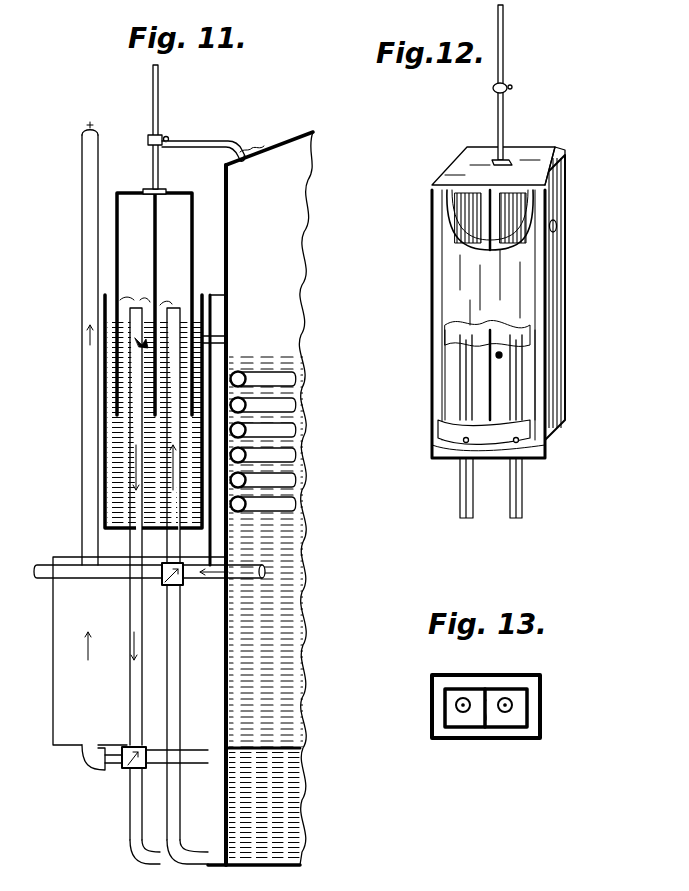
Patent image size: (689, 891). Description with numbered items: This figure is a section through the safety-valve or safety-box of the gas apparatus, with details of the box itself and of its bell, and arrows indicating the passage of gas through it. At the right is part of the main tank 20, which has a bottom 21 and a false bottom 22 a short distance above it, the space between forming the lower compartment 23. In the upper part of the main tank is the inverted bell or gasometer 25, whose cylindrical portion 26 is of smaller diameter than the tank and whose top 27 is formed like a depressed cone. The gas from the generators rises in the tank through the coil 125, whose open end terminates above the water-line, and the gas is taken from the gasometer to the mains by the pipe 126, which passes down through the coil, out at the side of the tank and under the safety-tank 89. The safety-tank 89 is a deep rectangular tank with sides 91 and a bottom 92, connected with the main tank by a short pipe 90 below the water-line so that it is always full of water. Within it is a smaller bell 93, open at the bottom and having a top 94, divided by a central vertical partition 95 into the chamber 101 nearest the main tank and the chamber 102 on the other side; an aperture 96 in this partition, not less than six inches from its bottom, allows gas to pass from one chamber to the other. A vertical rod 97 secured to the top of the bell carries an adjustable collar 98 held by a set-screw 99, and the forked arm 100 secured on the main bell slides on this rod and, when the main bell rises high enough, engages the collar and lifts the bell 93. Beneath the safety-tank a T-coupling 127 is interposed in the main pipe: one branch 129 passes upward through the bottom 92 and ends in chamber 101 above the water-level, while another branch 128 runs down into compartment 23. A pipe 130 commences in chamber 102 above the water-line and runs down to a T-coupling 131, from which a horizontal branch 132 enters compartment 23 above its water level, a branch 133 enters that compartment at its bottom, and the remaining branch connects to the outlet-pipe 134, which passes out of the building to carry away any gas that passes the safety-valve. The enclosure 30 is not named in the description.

In FIG. 11, the main tank 20 is at (269, 498).
In FIG. 11, the bottom 21 is at (282, 862).
In FIG. 11, the false bottom 22 is at (288, 750).
In FIG. 11, the lower compartment 23 is at (283, 788).
In FIG. 11, the bell 25 is at (278, 245).
In FIG. 11, the cylindrical portion 26 is at (228, 274).
In FIG. 11, the top 27 is at (282, 163).
In FIG. 11, the reservoir 30 is at (57, 680).
In FIG. 11, the safety-tank 89 is at (118, 470).
In FIG. 12, the safety-tank 89 is at (490, 287).
In FIG. 13, the safety-tank 89 is at (535, 681).
In FIG. 11, the short pipe 90 is at (222, 330).
In FIG. 12, the short pipe 90 is at (558, 229).
In FIG. 11, the sides 91 is at (105, 411).
In FIG. 12, the sides 91 is at (568, 283).
In FIG. 13, the sides 91 is at (480, 672).
In FIG. 11, the bottom 92 is at (108, 528).
In FIG. 12, the bottom 92 is at (507, 452).
In FIG. 11, the bell 93 is at (194, 262).
In FIG. 12, the bell 93 is at (548, 165).
In FIG. 13, the bell 93 is at (530, 700).
In FIG. 11, the top 94 is at (175, 195).
In FIG. 12, the top 94 is at (537, 148).
In FIG. 11, the central vertical partition 95 is at (158, 257).
In FIG. 12, the central vertical partition 95 is at (505, 400).
In FIG. 13, the central vertical partition 95 is at (476, 729).
In FIG. 11, the aperture 96 is at (140, 345).
In FIG. 12, the aperture 96 is at (497, 352).
In FIG. 13, the aperture 96 is at (490, 710).
In FIG. 11, the vertical rod 97 is at (158, 105).
In FIG. 12, the vertical rod 97 is at (504, 60).
In FIG. 11, the adjustable collar 98 is at (148, 138).
In FIG. 12, the adjustable collar 98 is at (493, 90).
In FIG. 11, the set-screw 99 is at (168, 138).
In FIG. 12, the set-screw 99 is at (512, 87).
In FIG. 11, the forked arm 100 is at (222, 137).
In FIG. 11, the chamber 101 is at (172, 207).
In FIG. 12, the chamber 101 is at (512, 205).
In FIG. 13, the chamber 101 is at (516, 717).
In FIG. 11, the chamber 102 is at (136, 207).
In FIG. 12, the chamber 102 is at (470, 206).
In FIG. 13, the chamber 102 is at (450, 696).
In FIG. 11, the coil 125 is at (300, 417).
In FIG. 11, the pipe 126 is at (44, 578).
In FIG. 11, the T-coupling 127 is at (166, 585).
In FIG. 11, the branch 128 is at (167, 700).
In FIG. 11, the branch 129 is at (167, 438).
In FIG. 12, the branch 129 is at (525, 373).
In FIG. 13, the branch 129 is at (508, 712).
In FIG. 11, the pipe 130 is at (130, 434).
In FIG. 12, the pipe 130 is at (462, 390).
In FIG. 13, the pipe 130 is at (457, 710).
In FIG. 11, the T-coupling 131 is at (128, 765).
In FIG. 11, the horizontal branch 132 is at (177, 767).
In FIG. 11, the branch 133 is at (130, 826).
In FIG. 11, the outlet-pipe 134 is at (83, 181).